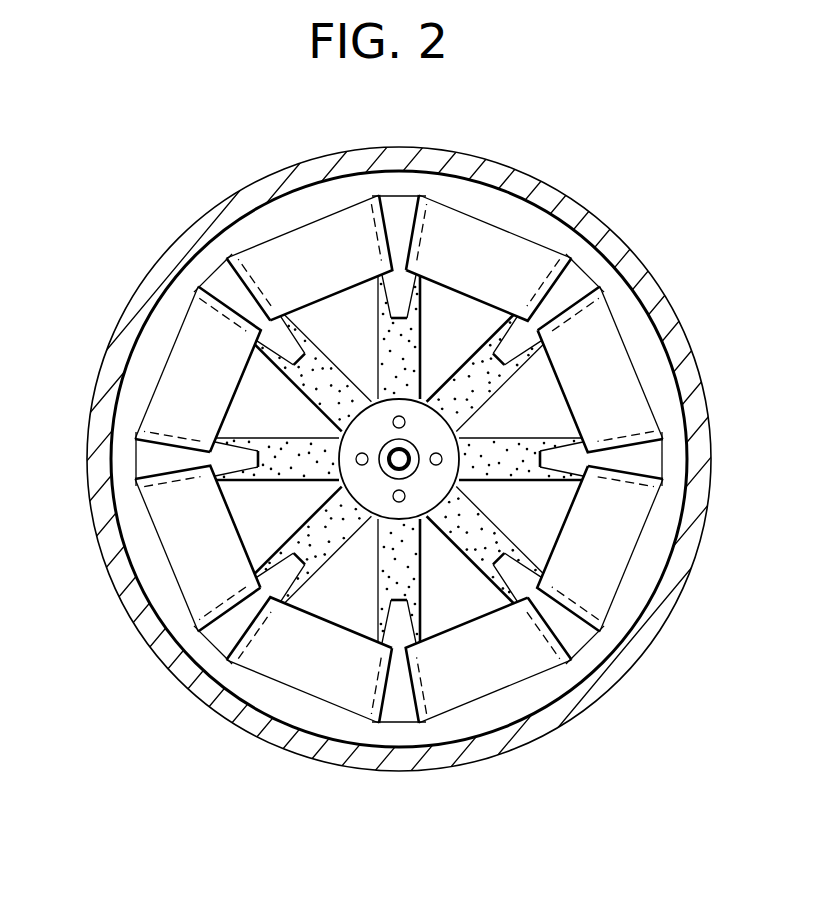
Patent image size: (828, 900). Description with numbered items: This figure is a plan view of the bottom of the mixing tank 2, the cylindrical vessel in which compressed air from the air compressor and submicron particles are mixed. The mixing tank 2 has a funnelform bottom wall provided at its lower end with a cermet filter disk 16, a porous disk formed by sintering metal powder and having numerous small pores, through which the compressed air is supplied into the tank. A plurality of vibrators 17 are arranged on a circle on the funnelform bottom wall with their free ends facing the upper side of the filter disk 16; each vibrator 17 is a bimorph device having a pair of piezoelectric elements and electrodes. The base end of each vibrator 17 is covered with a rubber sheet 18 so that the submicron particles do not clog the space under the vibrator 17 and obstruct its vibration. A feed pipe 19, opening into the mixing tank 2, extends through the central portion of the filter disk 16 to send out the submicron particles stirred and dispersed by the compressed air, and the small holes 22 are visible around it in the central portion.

The mixing tank 2 is at (645, 251).
The cermet filter disk 16 is at (270, 440).
The vibrator 17 is at (510, 327).
The rubber sheet 18 is at (473, 238).
The feed pipe 19 is at (396, 467).
The hole 22 is at (396, 417).